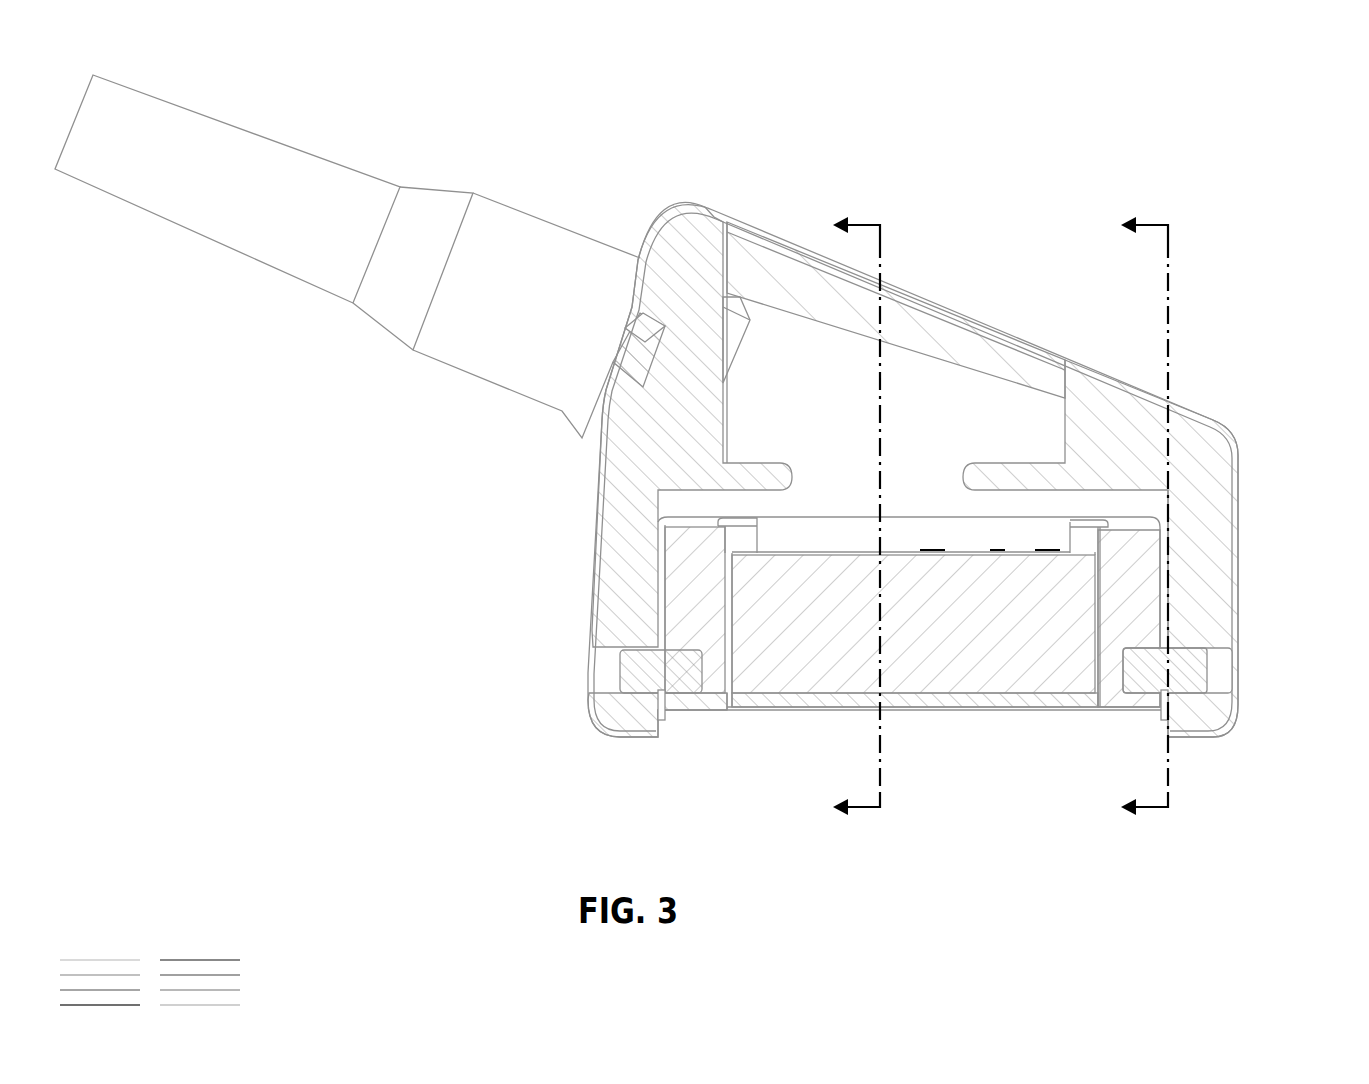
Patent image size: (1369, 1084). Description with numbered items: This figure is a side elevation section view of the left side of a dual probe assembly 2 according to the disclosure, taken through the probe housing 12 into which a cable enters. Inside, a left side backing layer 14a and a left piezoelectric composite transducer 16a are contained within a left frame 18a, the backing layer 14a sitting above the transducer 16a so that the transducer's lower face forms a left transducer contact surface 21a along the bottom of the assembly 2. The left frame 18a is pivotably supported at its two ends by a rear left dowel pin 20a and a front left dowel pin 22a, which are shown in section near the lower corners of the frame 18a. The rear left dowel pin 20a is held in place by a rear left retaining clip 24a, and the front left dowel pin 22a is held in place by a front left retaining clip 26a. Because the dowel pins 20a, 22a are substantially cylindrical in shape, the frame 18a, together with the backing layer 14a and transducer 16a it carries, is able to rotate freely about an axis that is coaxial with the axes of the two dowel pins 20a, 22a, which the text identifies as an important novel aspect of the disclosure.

The probe assembly 2 is at (701, 448).
The housing 12 is at (677, 465).
The left side backing layer 14a is at (790, 668).
The left piezoelectric composite transducer 16a is at (832, 698).
The left frame 18a is at (677, 580).
The rear left dowel pin 20a is at (657, 670).
The left transducer contact surface 21a is at (983, 707).
The front left dowel pin 22a is at (1185, 673).
The rear left retaining clip 24a is at (665, 710).
The front left retaining clip 26a is at (1163, 708).